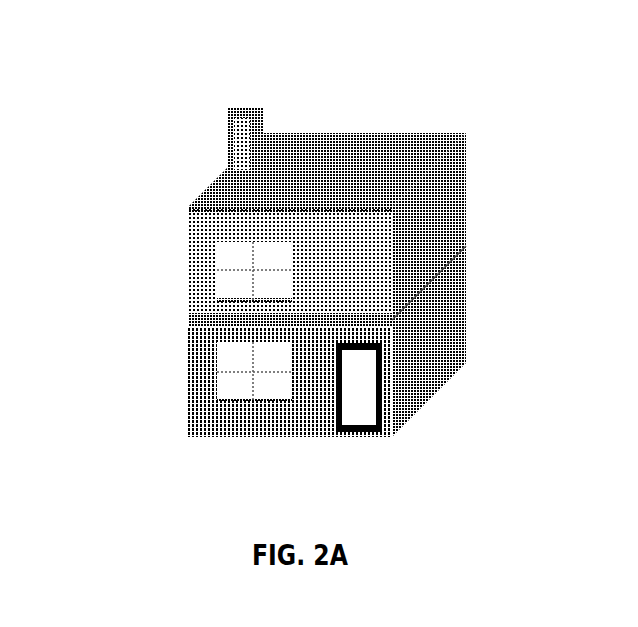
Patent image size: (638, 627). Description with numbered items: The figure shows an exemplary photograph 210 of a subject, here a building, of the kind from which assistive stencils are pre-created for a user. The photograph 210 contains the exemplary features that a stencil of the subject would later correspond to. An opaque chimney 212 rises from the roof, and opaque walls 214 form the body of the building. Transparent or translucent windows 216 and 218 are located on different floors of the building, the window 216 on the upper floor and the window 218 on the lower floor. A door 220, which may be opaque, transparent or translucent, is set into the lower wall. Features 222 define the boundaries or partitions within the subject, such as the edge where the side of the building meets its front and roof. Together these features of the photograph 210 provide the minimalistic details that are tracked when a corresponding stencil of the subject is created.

The photograph 210 is at (302, 252).
The opaque chimney 212 is at (146, 152).
The opaque walls 214 is at (116, 234).
The transparent or translucent window 216 is at (116, 286).
The transparent or translucent window 218 is at (116, 370).
The door 220 is at (401, 503).
The features defining boundaries or partitions 222 is at (528, 216).